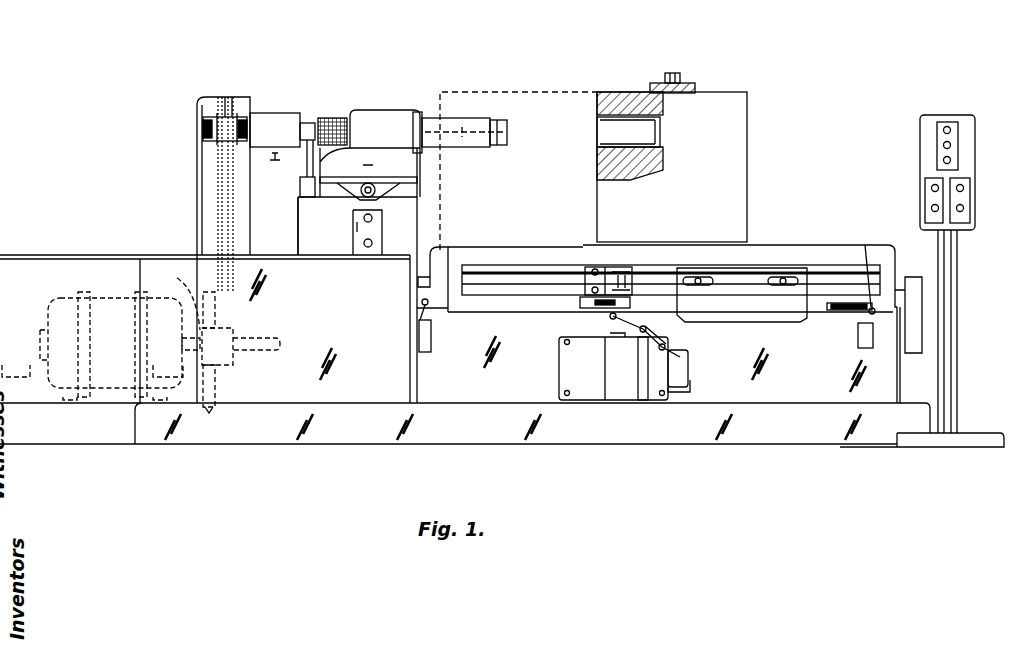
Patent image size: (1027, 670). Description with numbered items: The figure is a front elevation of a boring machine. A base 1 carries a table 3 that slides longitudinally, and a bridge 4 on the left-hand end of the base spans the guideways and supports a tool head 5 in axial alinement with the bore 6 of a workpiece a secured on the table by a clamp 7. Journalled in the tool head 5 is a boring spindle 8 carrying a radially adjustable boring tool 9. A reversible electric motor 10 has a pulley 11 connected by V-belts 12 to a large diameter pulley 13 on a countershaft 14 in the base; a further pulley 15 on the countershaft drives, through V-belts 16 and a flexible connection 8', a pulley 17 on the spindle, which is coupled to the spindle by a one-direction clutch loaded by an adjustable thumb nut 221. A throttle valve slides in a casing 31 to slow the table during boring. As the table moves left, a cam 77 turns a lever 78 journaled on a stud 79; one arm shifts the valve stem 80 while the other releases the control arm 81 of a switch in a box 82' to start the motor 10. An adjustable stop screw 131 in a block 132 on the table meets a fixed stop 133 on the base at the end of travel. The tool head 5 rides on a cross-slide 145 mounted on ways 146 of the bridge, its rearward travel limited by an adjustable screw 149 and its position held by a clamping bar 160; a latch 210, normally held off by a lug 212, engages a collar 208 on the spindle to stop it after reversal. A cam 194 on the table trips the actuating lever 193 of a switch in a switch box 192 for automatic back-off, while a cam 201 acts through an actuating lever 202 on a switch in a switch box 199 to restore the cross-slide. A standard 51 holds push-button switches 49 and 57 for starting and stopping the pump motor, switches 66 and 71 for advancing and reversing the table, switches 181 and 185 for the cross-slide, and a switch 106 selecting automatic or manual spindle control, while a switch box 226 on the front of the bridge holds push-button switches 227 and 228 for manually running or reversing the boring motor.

The base 1 is at (588, 434).
The table 3 is at (784, 252).
The bridge 4 is at (296, 248).
The tool head 5 is at (391, 110).
The bore 6 is at (612, 148).
The clamp 7 is at (684, 83).
The boring spindle 8 is at (459, 122).
The flexible connection 8' is at (332, 115).
The boring tool 9 is at (507, 132).
The reversible electric motor 10 is at (104, 298).
The pulley 11 is at (177, 297).
The V-belts 12 is at (211, 408).
The large diameter pulley 13 is at (222, 386).
The countershaft 14 is at (258, 350).
The pulley 15 is at (235, 335).
The V-belts 16 is at (215, 180).
The pulley 17 is at (226, 100).
The casing 31 is at (620, 390).
The push-button switch 49 is at (948, 126).
The standard 51 is at (975, 170).
The button switch 57 is at (950, 145).
The push-button switch 66 is at (931, 188).
The switch 71 is at (931, 208).
The cam 77 is at (712, 316).
The lever 78 is at (648, 331).
The stud 79 is at (649, 340).
The valve stem 80 is at (610, 325).
The control arm 81 is at (688, 364).
The box 82' is at (701, 389).
The switch 106 is at (943, 160).
The adjustable stop screw 131 is at (578, 278).
The block 132 is at (612, 272).
The fixed stop 133 is at (440, 250).
The cross-slide 145 is at (413, 178).
The ways 146 is at (397, 190).
The adjustable screw 149 is at (368, 183).
The clamping bar 160 is at (398, 163).
The push-button switch 181 is at (964, 188).
The push-button switch 185 is at (967, 212).
The switch box 192 is at (424, 350).
The actuating lever 193 is at (428, 307).
The cam 194 is at (580, 303).
The switch box 199 is at (858, 337).
The cam 201 is at (865, 272).
The actuating lever 202 is at (858, 322).
The collar 208 is at (310, 122).
The latch 210 is at (307, 167).
The lug 212 is at (309, 197).
The adjustable thumb nut 221 is at (197, 129).
The switch box 226 is at (357, 227).
The switch 227 is at (364, 218).
The switch 228 is at (364, 243).
The workpiece a is at (717, 98).